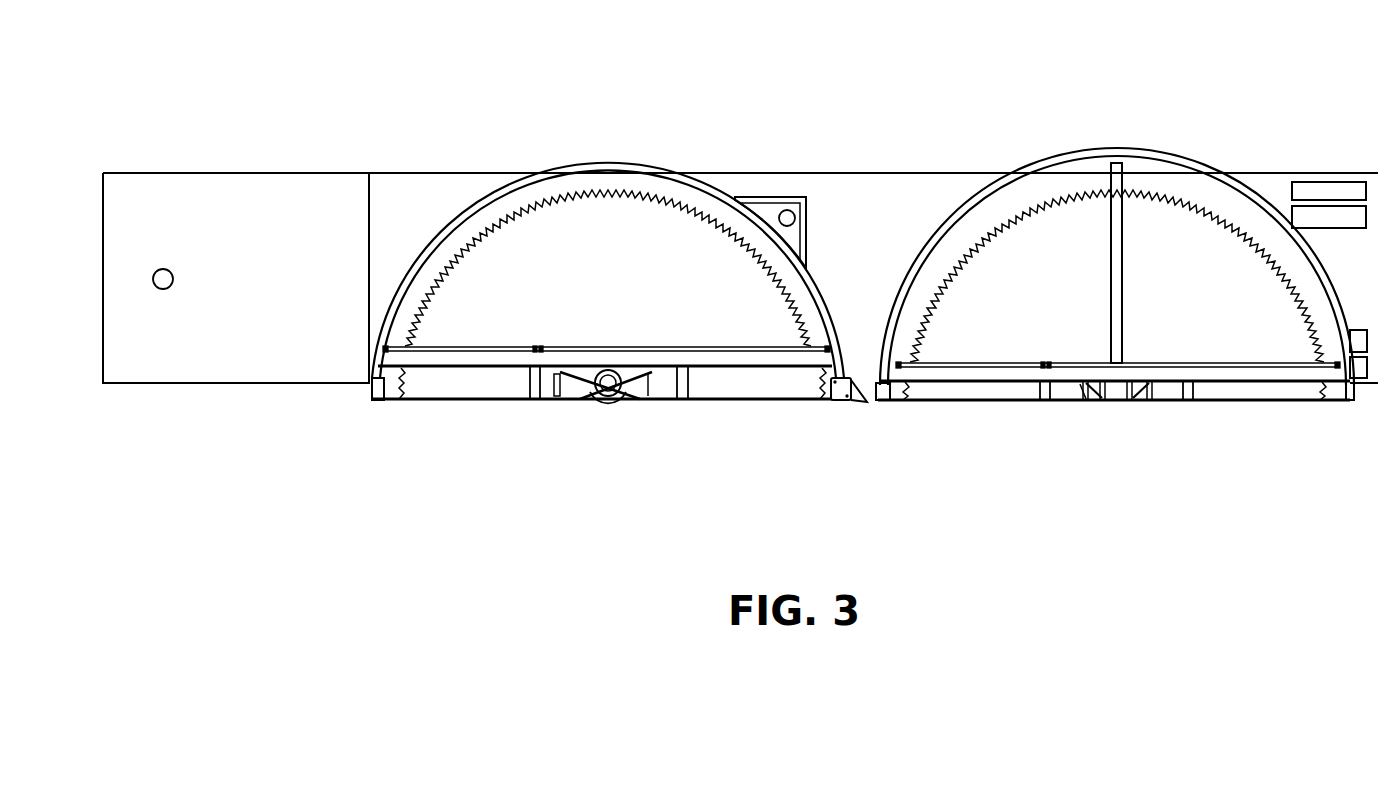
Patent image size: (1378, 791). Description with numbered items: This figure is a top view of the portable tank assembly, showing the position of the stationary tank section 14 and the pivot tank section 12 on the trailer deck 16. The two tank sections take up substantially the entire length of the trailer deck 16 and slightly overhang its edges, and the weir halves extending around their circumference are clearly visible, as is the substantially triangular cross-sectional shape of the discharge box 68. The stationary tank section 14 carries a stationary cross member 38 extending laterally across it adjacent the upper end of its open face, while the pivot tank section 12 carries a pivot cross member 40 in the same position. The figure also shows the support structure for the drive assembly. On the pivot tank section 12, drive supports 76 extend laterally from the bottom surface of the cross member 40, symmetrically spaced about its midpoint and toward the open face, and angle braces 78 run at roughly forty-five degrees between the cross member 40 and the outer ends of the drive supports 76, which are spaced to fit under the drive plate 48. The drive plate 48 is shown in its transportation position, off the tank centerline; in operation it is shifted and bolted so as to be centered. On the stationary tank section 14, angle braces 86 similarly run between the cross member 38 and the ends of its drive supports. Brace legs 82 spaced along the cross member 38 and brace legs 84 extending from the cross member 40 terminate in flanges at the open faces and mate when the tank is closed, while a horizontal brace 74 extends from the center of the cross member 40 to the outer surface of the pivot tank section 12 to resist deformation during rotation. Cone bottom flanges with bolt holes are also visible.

The pivot tank section 12 is at (1084, 165).
The stationary tank section 14 is at (480, 200).
The trailer deck 16 is at (400, 172).
The stationary cross member 38 is at (421, 399).
The pivot cross member 40 is at (1289, 374).
The drive plate 48 is at (612, 399).
The discharge box 68 is at (768, 196).
The brace 74 is at (1124, 247).
The drive supports 76 is at (1101, 384).
The angle braces 78 is at (1091, 384).
The brace legs 82 is at (690, 395).
The brace legs 84 is at (1194, 391).
The angle braces 86 is at (562, 384).